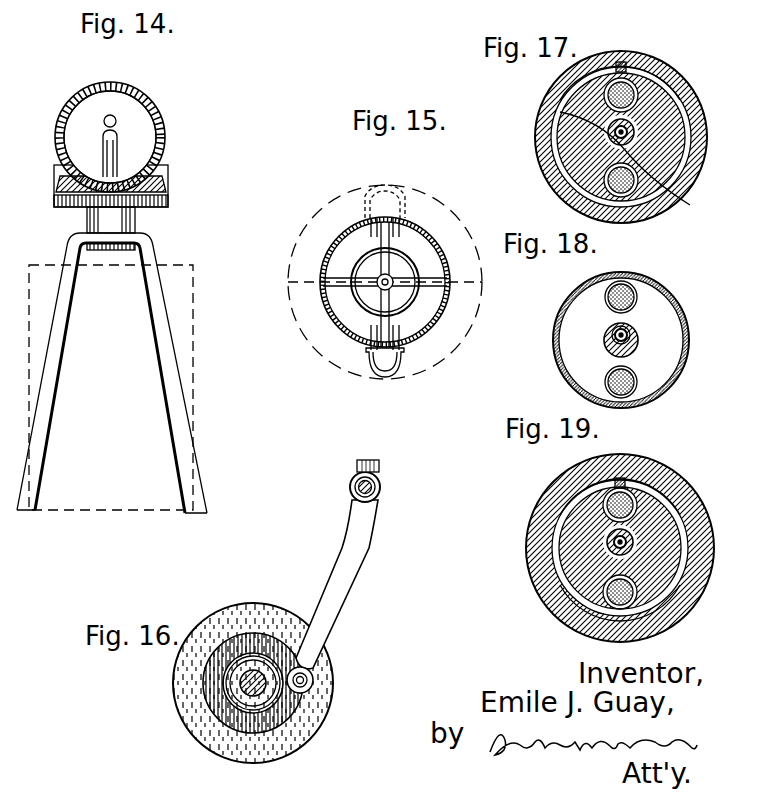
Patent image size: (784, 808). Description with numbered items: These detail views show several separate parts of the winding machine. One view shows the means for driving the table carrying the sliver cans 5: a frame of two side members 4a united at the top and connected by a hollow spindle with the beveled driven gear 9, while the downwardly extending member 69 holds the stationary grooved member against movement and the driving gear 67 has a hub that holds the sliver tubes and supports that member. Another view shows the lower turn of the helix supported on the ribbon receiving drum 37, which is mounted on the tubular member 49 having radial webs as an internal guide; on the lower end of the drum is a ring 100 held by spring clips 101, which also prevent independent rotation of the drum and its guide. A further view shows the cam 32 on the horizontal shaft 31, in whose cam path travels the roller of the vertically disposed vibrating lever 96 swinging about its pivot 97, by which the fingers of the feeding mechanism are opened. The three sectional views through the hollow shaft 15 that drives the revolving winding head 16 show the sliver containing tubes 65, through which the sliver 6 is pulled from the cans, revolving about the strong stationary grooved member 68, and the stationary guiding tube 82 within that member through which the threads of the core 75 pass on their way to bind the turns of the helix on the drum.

In FIG. 14, the side members 4a is at (175, 370).
In FIG. 14, the containers or cans 5 is at (195, 326).
In FIG. 14, the beveled driven gear 9 is at (170, 187).
In FIG. 14, the driving gear 67 is at (163, 118).
In FIG. 19, the driving gear 67 is at (690, 495).
In FIG. 14, the downwardly extending member 69 is at (118, 160).
In FIG. 15, the ribbon receiving drum 37 is at (445, 317).
In FIG. 15, the tubular member 49 is at (357, 307).
In FIG. 15, the ring 100 is at (452, 217).
In FIG. 15, the spring clips 101 is at (363, 195).
In FIG. 16, the horizontal shaft 31 is at (263, 692).
In FIG. 16, the cam 32 is at (330, 665).
In FIG. 16, the vibrating lever 96 is at (380, 465).
In FIG. 16, the pivot 97 is at (381, 489).
In FIG. 17, the sliver 6 is at (611, 73).
In FIG. 18, the sliver 6 is at (635, 292).
In FIG. 19, the sliver 6 is at (628, 486).
In FIG. 17, the hollow shaft 15 is at (673, 148).
In FIG. 18, the hollow shaft 15 is at (687, 323).
In FIG. 19, the hollow shaft 15 is at (687, 535).
In FIG. 17, the revolving winding head 16 is at (540, 113).
In FIG. 17, the sliver containing tubes 65 is at (677, 80).
In FIG. 18, the sliver containing tubes 65 is at (637, 302).
In FIG. 19, the sliver containing tubes 65 is at (655, 493).
In FIG. 17, the stationary grooved member 68 is at (634, 151).
In FIG. 18, the stationary grooved member 68 is at (634, 345).
In FIG. 19, the stationary grooved member 68 is at (635, 555).
In FIG. 17, the core 75 is at (633, 129).
In FIG. 18, the core 75 is at (612, 328).
In FIG. 19, the core 75 is at (633, 545).
In FIG. 17, the stationary guiding tube 82 is at (605, 125).
In FIG. 18, the stationary guiding tube 82 is at (631, 326).
In FIG. 19, the stationary guiding tube 82 is at (610, 533).